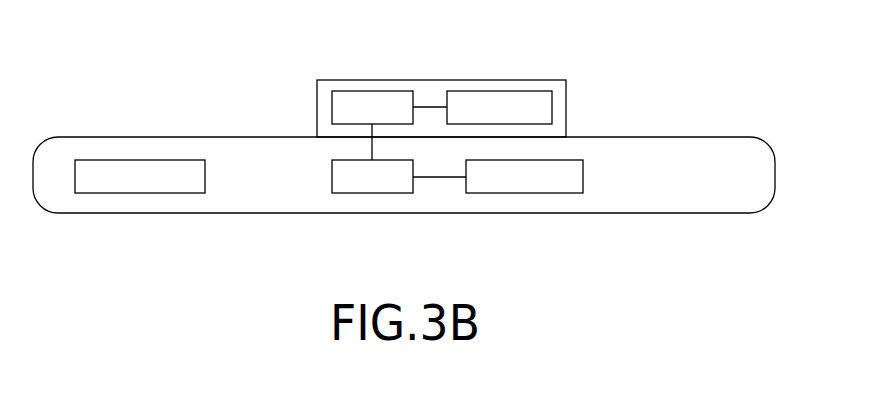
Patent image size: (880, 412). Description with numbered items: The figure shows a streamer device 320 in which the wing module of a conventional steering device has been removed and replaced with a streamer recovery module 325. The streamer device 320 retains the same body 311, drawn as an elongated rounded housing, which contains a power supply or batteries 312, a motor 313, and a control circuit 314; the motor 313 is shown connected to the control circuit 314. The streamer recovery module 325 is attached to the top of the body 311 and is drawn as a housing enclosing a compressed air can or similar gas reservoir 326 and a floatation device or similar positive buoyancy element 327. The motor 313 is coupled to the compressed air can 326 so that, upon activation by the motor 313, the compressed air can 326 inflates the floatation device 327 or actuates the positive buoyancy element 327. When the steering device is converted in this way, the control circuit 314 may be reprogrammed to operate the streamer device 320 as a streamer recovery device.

The body 311 is at (703, 213).
The batteries 312 is at (153, 194).
The motor 313 is at (370, 194).
The control circuit 314 is at (522, 194).
The streamer device 320 is at (172, 92).
The streamer recovery module 325 is at (468, 80).
The compressed air can 326 is at (337, 105).
The floatation device 327 is at (543, 107).